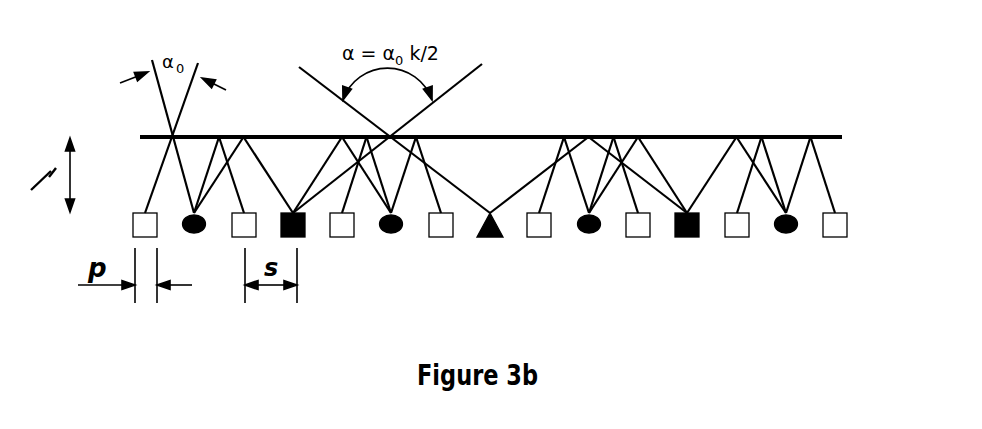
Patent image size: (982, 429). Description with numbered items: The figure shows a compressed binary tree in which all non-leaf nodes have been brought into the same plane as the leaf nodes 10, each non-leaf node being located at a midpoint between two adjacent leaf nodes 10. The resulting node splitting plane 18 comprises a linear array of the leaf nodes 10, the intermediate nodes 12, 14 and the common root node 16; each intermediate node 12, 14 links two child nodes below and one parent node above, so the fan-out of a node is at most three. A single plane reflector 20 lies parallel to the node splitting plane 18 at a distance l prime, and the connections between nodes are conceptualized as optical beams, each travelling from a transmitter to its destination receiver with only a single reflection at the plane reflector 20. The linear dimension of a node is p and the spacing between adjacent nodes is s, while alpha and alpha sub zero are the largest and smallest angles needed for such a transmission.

The leaf node 10 is at (133, 220).
The intermediate node 12 is at (200, 233).
The intermediate node 14 is at (305, 237).
The common root node 16 is at (488, 238).
The node splitting plane 18 is at (503, 229).
The plane reflector 20 is at (793, 135).